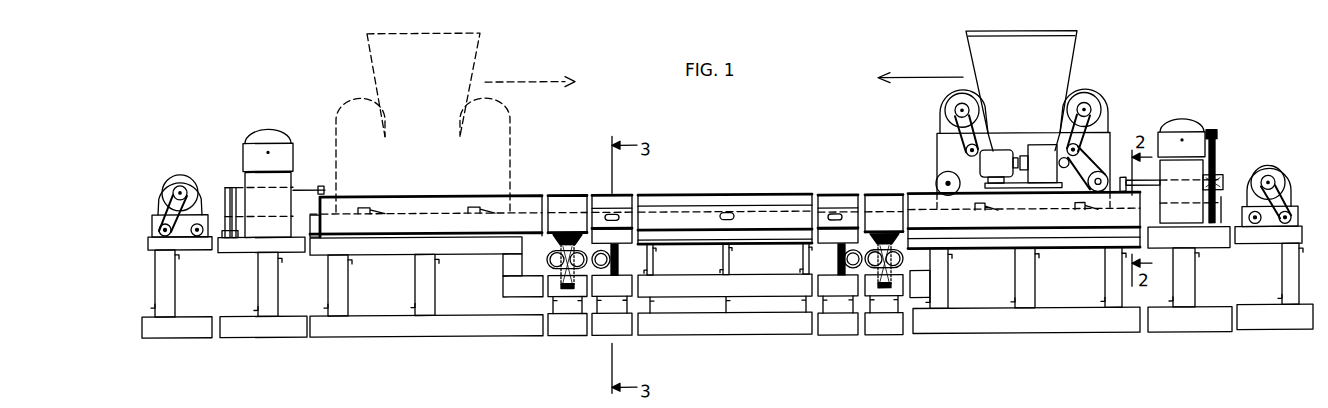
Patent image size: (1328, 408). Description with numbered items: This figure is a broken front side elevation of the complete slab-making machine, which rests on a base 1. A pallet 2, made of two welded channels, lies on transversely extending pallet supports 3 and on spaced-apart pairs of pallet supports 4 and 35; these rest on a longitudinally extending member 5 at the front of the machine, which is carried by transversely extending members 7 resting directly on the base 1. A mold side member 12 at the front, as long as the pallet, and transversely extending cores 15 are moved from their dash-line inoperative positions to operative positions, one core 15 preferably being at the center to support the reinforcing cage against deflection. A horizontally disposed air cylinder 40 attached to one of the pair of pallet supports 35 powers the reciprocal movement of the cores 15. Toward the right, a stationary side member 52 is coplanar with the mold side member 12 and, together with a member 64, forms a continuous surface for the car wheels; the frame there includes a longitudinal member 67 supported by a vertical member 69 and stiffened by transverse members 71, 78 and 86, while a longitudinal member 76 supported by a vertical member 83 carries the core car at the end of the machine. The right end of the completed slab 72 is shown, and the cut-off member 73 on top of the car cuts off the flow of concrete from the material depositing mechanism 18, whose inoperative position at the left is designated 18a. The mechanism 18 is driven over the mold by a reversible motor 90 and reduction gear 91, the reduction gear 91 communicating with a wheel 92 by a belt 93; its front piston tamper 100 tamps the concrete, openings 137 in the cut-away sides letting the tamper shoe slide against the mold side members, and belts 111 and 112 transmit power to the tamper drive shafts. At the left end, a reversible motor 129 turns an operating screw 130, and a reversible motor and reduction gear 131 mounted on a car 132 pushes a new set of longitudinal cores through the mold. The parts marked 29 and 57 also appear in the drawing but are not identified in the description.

The base 1 is at (441, 330).
The pallet 2 is at (692, 236).
The pallet supports 3 is at (803, 262).
The pallet supports 4 is at (898, 258).
The longitudinally extending member 5 is at (700, 288).
The transversely extending members 7 is at (800, 313).
The mold side member 12 is at (848, 194).
The transverse cores 15 is at (728, 214).
The material depositing mechanism 18 is at (1078, 45).
The inoperative position of material depositing mechanism 18a is at (480, 49).
The roller assembly 29 is at (907, 264).
The pallet supports 35 is at (612, 276).
The air cylinder 40 is at (855, 300).
The stationary side member 52 is at (997, 217).
The lever 57 is at (1216, 186).
The member 64 is at (1162, 176).
The longitudinally extending member 67 is at (1202, 241).
The vertical member 69 is at (1108, 295).
The transversely extending member 71 is at (1100, 257).
The completed slab 72 is at (563, 212).
The cut-off member 73 is at (462, 210).
The longitudinally extending member 76 is at (1243, 237).
The transversely extending member 78 is at (1197, 310).
The vertically disposed member 83 is at (1290, 281).
The transverse member 86 is at (1296, 298).
The reversible motor 90 is at (996, 152).
The reduction gear 91 is at (1033, 147).
The wheel 92 is at (1113, 194).
The belt 93 is at (1083, 140).
The front piston tamper 100 is at (484, 220).
The belt 111 is at (958, 128).
The belt 112 is at (1102, 113).
The reversible motor 129 is at (266, 128).
The operating screw 130 is at (296, 184).
The reversible motor and reduction gear 131 is at (190, 172).
The car 132 is at (150, 222).
The openings 137 is at (382, 222).